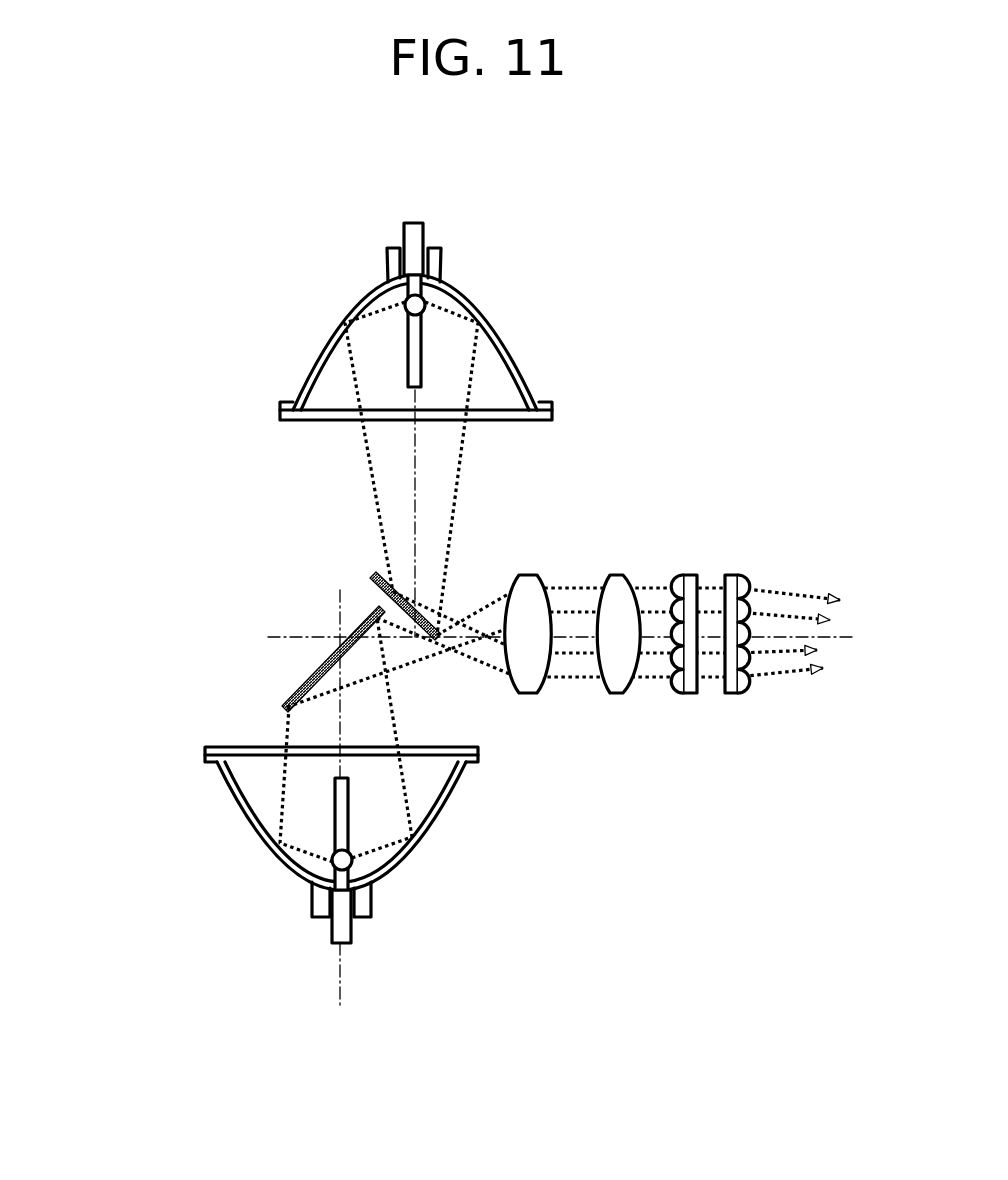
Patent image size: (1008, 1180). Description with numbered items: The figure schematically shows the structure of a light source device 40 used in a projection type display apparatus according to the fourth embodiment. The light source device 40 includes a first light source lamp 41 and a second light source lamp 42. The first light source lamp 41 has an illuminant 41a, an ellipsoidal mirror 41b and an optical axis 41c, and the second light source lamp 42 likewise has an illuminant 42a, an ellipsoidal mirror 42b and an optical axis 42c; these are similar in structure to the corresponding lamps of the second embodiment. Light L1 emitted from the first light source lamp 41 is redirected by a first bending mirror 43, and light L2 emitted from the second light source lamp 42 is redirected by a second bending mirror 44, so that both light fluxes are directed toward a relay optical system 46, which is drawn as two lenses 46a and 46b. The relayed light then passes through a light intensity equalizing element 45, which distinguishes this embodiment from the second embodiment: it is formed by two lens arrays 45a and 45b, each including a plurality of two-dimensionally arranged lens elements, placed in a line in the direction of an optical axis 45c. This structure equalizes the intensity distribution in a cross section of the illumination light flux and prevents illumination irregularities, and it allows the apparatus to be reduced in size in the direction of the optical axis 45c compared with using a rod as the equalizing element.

The light source device 40 is at (888, 190).
The first light source lamp 41 is at (187, 192).
The illuminant 41a is at (403, 300).
The ellipsoidal mirror 41b is at (327, 343).
The optical axis 41c is at (415, 457).
The second light source lamp 42 is at (120, 800).
The illuminant 42a is at (330, 862).
The ellipsoidal mirror 42b is at (252, 817).
The optical axis 42c is at (343, 712).
The first bending mirror 43 is at (383, 604).
The second bending mirror 44 is at (300, 692).
The light intensity equalizing element 45 is at (772, 800).
The lens array 45a is at (689, 693).
The lens array 45b is at (736, 693).
The optical axis 45c is at (855, 635).
The relay optical system 46 is at (647, 797).
The first condenser lens 46a is at (530, 693).
The second condenser lens 46b is at (616, 693).
The light from first lamp L1 is at (370, 465).
The light from second lamp L2 is at (293, 735).